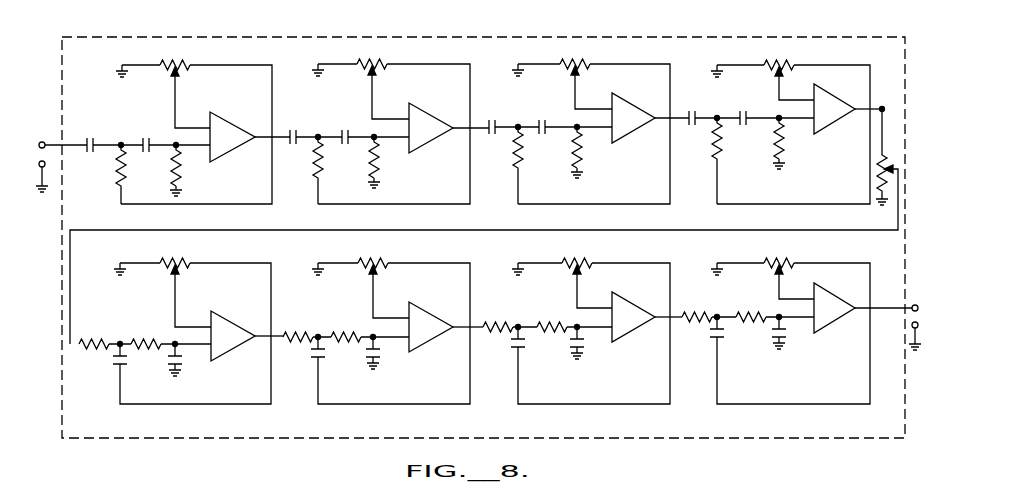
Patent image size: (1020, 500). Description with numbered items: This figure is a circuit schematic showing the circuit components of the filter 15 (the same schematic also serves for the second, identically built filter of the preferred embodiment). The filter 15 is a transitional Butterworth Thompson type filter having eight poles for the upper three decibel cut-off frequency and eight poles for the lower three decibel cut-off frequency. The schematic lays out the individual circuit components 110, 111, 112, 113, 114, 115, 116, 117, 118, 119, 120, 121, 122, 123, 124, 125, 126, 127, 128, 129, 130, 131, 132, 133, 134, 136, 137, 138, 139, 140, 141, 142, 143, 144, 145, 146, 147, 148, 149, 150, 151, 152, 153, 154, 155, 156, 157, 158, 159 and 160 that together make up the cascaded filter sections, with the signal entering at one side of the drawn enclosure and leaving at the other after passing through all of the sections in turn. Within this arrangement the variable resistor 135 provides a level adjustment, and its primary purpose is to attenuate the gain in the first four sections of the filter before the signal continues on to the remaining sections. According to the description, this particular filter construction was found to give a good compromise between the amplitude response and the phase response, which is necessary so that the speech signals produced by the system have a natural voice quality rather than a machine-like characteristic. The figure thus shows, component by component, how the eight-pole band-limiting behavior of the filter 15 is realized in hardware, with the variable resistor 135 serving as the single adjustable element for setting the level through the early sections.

The filter 15 is at (776, 35).
The input terminal 110 is at (46, 140).
The capacitor 111 is at (88, 141).
The resistor 112 is at (116, 182).
The capacitor 113 is at (141, 139).
The resistor 114 is at (182, 174).
The potentiometer 115 is at (178, 64).
The amplifier 116 is at (222, 125).
The capacitor 117 is at (289, 127).
The resistor 118 is at (315, 176).
The capacitor 119 is at (338, 127).
The potentiometer 120 is at (379, 62).
The resistor 121 is at (381, 172).
The amplifier 122 is at (420, 113).
The capacitor 123 is at (494, 117).
The resistor 124 is at (515, 173).
The capacitor 125 is at (539, 117).
The potentiometer 126 is at (583, 62).
The resistor 127 is at (584, 162).
The amplifier 128 is at (620, 103).
The capacitor 129 is at (693, 112).
The resistor 130 is at (714, 167).
The capacitor 131 is at (742, 112).
The resistor 132 is at (786, 150).
The potentiometer 133 is at (789, 64).
The amplifier 134 is at (822, 95).
The variable resistor 135 is at (893, 158).
The resistor 136 is at (80, 338).
The capacitor 137 is at (111, 360).
The resistor 138 is at (128, 338).
The potentiometer 139 is at (174, 258).
The capacitor 140 is at (187, 368).
The amplifier 141 is at (226, 323).
The resistor 142 is at (285, 330).
The capacitor 143 is at (314, 356).
The resistor 144 is at (334, 330).
The capacitor 145 is at (367, 356).
The potentiometer 146 is at (375, 258).
The amplifier 147 is at (425, 313).
The resistor 148 is at (490, 320).
The capacitor 149 is at (514, 340).
The resistor 150 is at (539, 320).
The capacitor 151 is at (568, 340).
The potentiometer 152 is at (578, 258).
The amplifier 153 is at (621, 303).
The resistor 154 is at (689, 317).
The capacitor 155 is at (713, 333).
The resistor 156 is at (738, 317).
The capacitor 157 is at (769, 333).
The potentiometer 158 is at (783, 258).
The amplifier 159 is at (821, 301).
The output terminal 160 is at (896, 308).